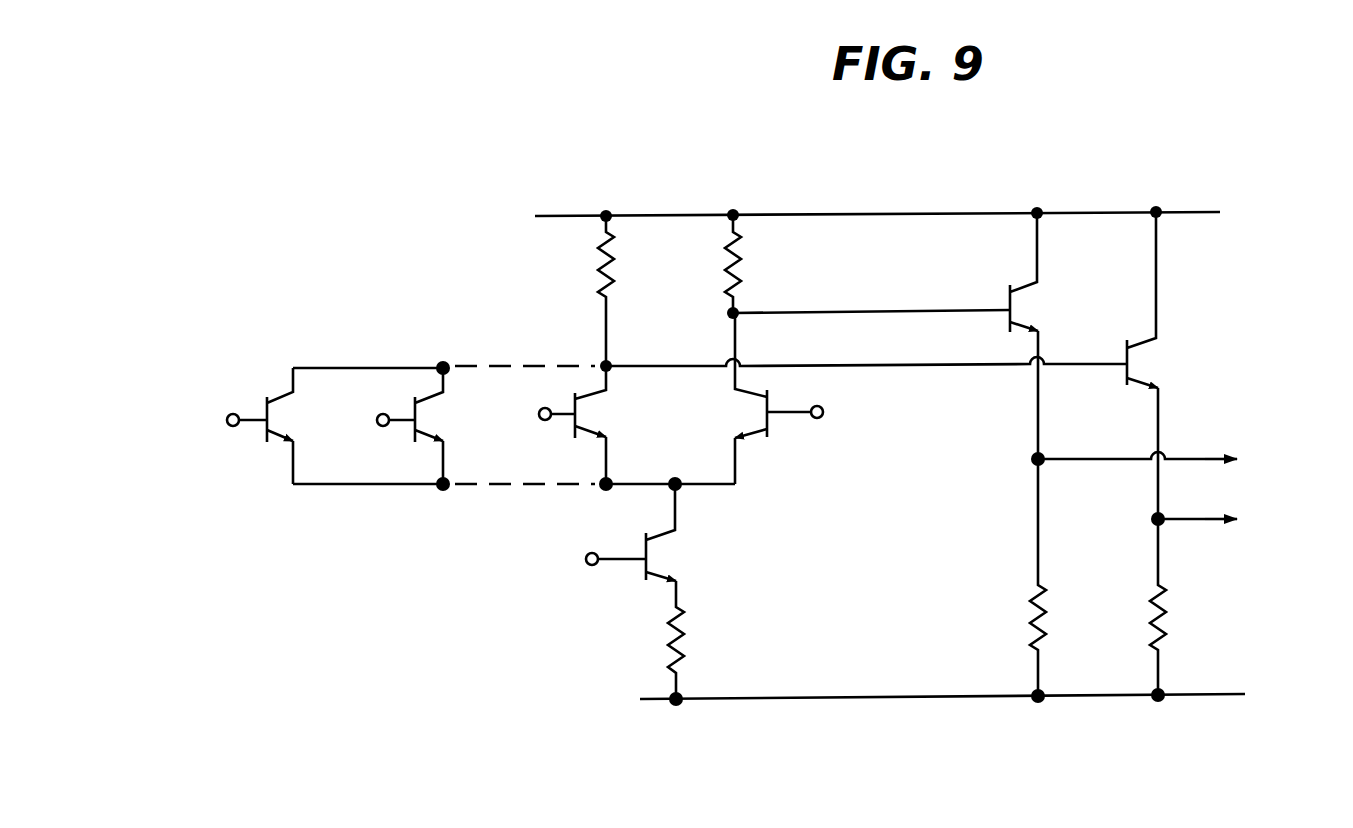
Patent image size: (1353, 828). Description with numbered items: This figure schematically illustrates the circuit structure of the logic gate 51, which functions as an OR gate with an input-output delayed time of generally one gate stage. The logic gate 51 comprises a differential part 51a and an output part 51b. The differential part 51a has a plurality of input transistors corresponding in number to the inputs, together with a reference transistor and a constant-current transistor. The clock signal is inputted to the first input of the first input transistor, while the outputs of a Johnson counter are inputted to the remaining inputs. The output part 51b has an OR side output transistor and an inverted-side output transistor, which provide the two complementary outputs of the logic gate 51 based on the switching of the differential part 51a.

The logic gate 51 is at (909, 176).
The differential part 51a is at (773, 492).
The output part 51b is at (1016, 399).